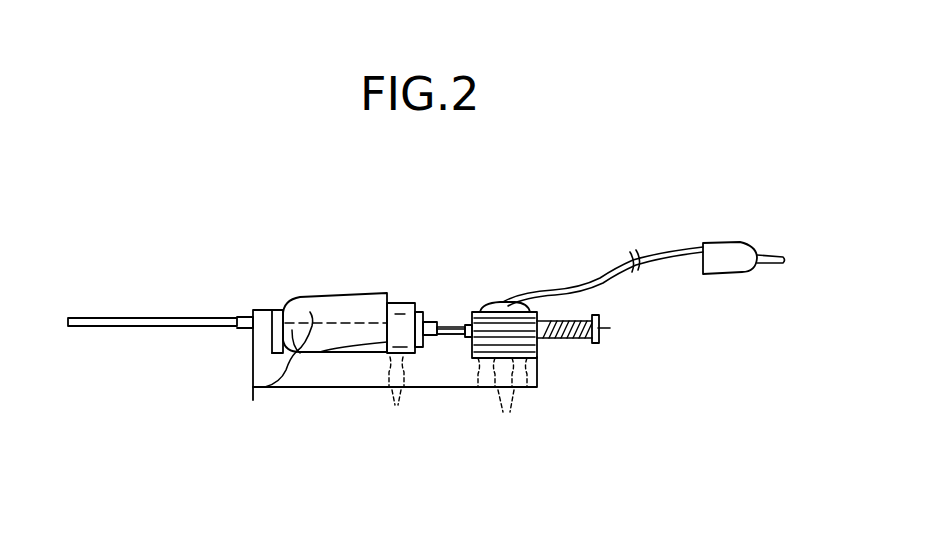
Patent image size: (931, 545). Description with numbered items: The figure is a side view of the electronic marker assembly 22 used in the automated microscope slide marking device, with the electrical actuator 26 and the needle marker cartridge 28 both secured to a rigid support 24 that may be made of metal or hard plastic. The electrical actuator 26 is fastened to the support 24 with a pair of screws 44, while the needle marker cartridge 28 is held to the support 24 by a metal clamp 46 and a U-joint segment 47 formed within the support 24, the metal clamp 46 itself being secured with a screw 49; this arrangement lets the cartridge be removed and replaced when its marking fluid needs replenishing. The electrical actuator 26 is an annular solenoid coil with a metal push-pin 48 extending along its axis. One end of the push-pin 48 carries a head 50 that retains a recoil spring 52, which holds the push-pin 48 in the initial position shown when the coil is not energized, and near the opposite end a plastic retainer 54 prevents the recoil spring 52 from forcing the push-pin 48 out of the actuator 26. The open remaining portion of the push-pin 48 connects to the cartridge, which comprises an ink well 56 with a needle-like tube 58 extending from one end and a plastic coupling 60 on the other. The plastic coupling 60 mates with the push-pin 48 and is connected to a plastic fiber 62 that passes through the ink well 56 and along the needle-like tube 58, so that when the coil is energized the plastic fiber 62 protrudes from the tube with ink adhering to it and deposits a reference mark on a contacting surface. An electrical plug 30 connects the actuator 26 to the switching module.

The electronic marker assembly 22 is at (477, 198).
The support 24 is at (312, 372).
The electrical actuator 26 is at (510, 302).
The needle marker cartridge 28 is at (332, 273).
The electrical plug 30 is at (722, 258).
The screws 44 is at (502, 399).
The metal clamp 46 is at (400, 312).
The U-joint segment 47 is at (253, 340).
The metal push-pin 48 is at (445, 300).
The screw 49 is at (390, 394).
The head 50 is at (598, 328).
The recoil spring 52 is at (557, 337).
The plastic retainer 54 is at (467, 313).
The ink well 56 is at (300, 300).
The needle-like tube 58 is at (97, 318).
The plastic coupling 60 is at (440, 335).
The plastic fiber 62 is at (256, 387).